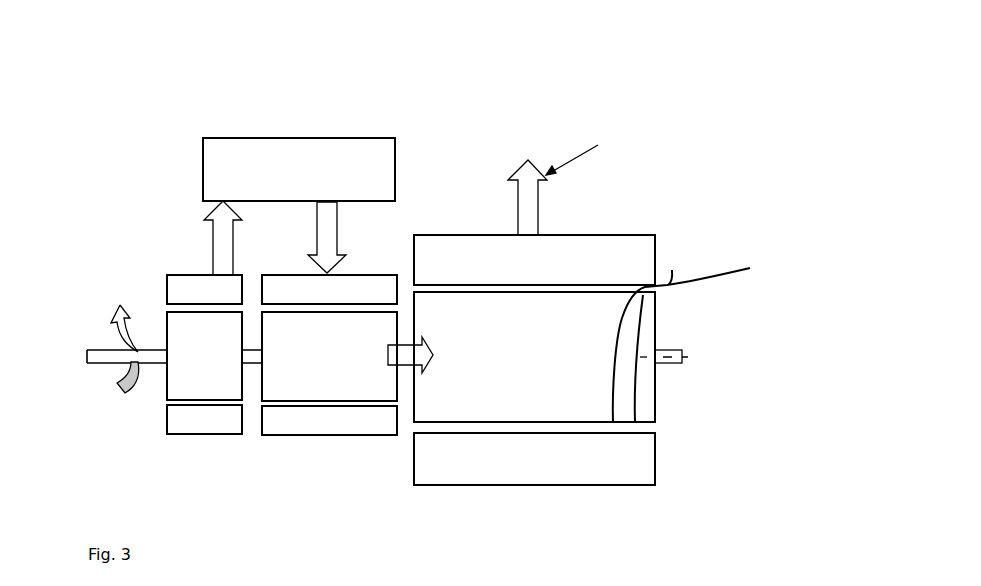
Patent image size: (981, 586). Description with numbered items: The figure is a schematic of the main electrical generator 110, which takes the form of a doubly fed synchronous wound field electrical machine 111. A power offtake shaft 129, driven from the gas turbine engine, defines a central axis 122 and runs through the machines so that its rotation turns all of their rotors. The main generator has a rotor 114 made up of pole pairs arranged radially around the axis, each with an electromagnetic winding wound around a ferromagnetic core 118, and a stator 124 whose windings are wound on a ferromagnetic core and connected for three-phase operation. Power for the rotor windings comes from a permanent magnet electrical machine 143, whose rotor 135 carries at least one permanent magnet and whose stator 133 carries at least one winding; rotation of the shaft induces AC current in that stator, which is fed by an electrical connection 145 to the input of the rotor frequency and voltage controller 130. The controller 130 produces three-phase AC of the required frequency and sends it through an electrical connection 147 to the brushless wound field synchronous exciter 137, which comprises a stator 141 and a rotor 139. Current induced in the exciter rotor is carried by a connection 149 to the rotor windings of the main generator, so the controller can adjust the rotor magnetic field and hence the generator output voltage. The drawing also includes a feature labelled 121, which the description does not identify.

The main electrical generator 110 is at (720, 250).
The doubly fed synchronous wound field electrical machine 111 is at (696, 415).
The rotor 114 is at (658, 322).
The ferromagnetic core 118 is at (658, 411).
The heat source side 121 is at (327, 454).
The central axis 122 is at (695, 360).
The stator 124 is at (617, 235).
The power offtake shaft 129 is at (88, 362).
The rotor frequency and voltage controller 130 is at (250, 137).
The stator 133 is at (272, 273).
The rotor 135 is at (263, 388).
The brushless wound field synchronous exciter 137 is at (392, 452).
The rotor 139 is at (170, 388).
The stator 141 is at (167, 283).
The permanent magnet electrical machine 143 is at (152, 312).
The electrical connection 145 is at (213, 240).
The electrical connection 147 is at (338, 232).
The connection 149 is at (412, 343).